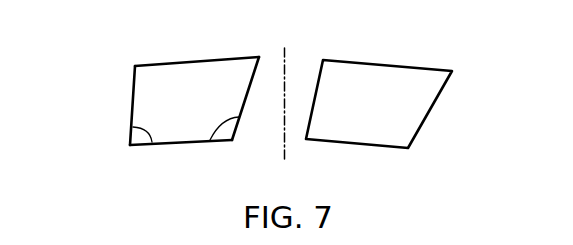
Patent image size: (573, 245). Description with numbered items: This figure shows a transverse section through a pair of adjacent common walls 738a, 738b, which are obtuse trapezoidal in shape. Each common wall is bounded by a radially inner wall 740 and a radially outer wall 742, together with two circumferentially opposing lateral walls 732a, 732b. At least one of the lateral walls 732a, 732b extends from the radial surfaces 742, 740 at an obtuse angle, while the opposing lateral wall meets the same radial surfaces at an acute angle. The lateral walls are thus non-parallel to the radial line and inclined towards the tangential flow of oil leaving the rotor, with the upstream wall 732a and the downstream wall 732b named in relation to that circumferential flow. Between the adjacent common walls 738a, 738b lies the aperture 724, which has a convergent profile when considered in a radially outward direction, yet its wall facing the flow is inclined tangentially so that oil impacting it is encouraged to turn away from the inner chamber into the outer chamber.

The aperture 724 is at (277, 77).
The upstream lateral wall 732a is at (242, 115).
The downstream lateral wall 732b is at (85, 105).
The common wall 738a is at (167, 106).
The common wall 738b is at (404, 113).
The radially inner wall 740 is at (150, 147).
The radially outer wall 742 is at (165, 62).